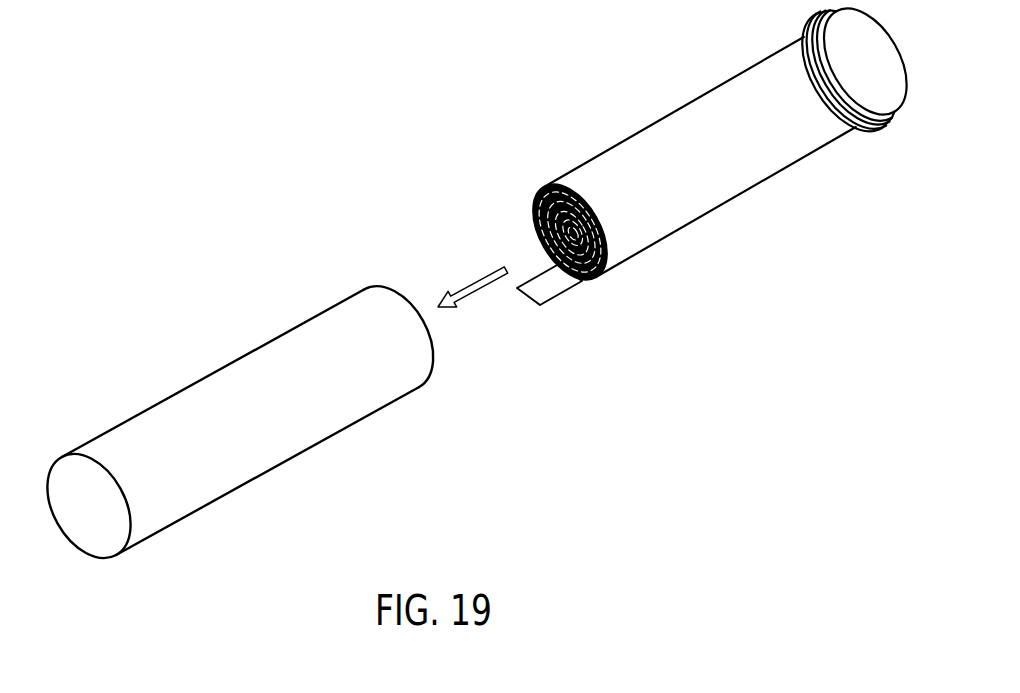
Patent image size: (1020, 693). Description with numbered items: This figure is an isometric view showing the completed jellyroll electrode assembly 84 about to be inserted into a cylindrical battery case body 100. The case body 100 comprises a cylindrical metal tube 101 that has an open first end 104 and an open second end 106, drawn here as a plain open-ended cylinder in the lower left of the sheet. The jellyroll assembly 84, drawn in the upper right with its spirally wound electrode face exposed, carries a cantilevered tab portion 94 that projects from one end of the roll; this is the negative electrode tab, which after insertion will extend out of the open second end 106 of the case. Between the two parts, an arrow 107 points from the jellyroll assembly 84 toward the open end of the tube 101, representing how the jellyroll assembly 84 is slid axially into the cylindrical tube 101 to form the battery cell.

The jellyroll assembly 84 is at (704, 48).
The cantilevered tab portion 94 is at (567, 290).
The battery case body 100 is at (292, 422).
The cylindrical metal tube 101 is at (197, 377).
The open first end 104 is at (451, 372).
The open second end 106 is at (78, 592).
The arrow 107 is at (476, 278).